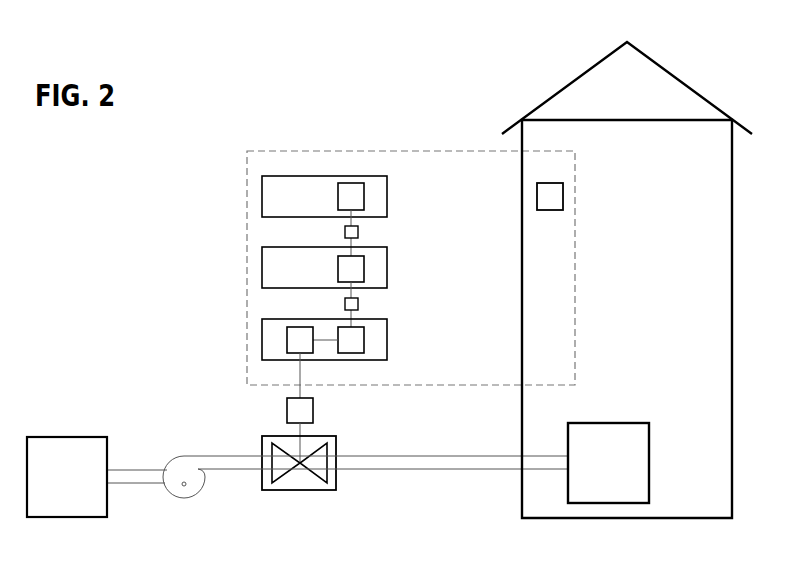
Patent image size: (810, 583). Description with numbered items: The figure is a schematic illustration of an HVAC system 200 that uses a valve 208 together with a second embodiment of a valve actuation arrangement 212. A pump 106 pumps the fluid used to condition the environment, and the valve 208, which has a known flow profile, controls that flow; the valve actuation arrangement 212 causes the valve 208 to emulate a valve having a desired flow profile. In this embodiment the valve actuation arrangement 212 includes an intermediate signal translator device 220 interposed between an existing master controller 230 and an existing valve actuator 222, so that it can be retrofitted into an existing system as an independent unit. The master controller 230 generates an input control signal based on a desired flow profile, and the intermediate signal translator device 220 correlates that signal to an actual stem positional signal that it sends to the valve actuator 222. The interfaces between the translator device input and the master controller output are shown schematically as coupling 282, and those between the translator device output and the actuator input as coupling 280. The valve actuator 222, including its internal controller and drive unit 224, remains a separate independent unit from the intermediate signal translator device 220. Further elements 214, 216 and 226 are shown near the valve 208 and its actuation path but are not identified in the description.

The HVAC system 200 is at (240, 98).
The valve actuation arrangement 212 is at (292, 150).
The master controller 230 is at (262, 177).
The intermediate signal translator device 220 is at (262, 248).
The valve actuator 222 is at (262, 320).
The internal controller and drive unit 224 is at (287, 343).
The actuator 226 is at (287, 408).
The valve stem 214 is at (300, 430).
The valve body 216 is at (262, 438).
The valve 208 is at (288, 491).
The coupling 280 is at (359, 303).
The coupling 282 is at (359, 231).
The pump 106 is at (195, 498).